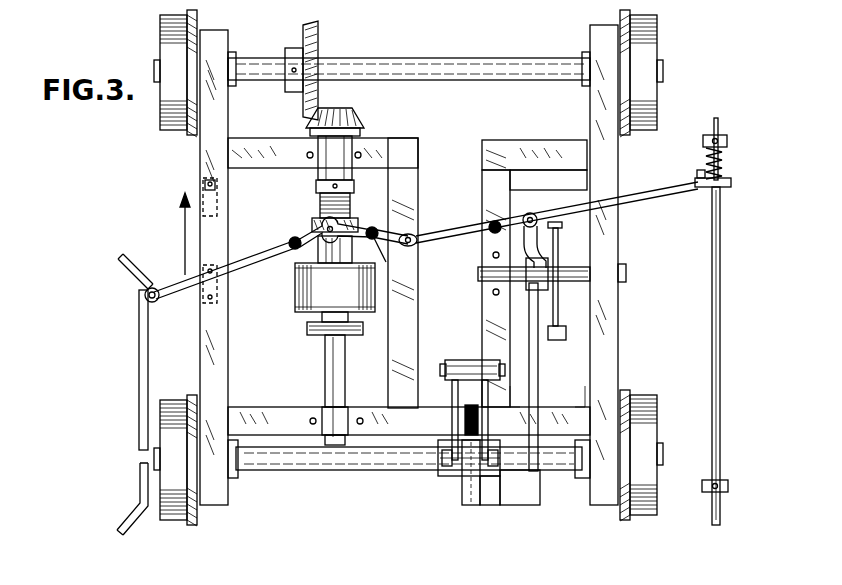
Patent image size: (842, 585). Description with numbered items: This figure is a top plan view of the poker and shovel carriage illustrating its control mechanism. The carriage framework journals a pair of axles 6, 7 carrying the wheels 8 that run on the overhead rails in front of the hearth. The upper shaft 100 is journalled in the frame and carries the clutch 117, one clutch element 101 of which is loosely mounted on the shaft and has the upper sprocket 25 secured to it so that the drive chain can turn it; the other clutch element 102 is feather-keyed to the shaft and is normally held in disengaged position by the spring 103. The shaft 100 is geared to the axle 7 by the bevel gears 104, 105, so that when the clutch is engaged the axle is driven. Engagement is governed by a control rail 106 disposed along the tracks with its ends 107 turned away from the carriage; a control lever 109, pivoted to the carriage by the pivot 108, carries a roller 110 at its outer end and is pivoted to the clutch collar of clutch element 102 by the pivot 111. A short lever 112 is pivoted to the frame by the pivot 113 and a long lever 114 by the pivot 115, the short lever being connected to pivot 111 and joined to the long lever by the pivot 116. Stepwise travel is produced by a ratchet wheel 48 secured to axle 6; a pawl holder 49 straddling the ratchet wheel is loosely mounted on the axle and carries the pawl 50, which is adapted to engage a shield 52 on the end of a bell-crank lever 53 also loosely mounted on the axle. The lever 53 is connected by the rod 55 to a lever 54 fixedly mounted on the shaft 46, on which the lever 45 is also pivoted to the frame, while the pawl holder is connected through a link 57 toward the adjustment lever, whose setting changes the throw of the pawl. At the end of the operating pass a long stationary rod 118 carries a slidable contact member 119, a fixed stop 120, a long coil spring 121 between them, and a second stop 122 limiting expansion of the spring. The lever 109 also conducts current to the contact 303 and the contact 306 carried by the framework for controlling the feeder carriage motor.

The axle 6 is at (381, 472).
The axle 7 is at (452, 62).
The wheels 8 is at (162, 33).
The upper sprocket 25 is at (315, 335).
The lever 45 is at (541, 245).
The pivot 46 is at (626, 272).
The ratchet wheel 48 is at (464, 420).
The pawl holder 49 is at (446, 471).
The pawl 50 is at (470, 456).
The shield 52 is at (471, 492).
The bell-crank lever 53 is at (510, 496).
The lever 54 is at (546, 286).
The rod 55 is at (539, 380).
The link 57 is at (464, 362).
The upper shaft 100 is at (330, 355).
The clutch element 101 is at (335, 274).
The clutch element 102 is at (308, 250).
The spring 103 is at (320, 199).
The bevel gear 104 is at (319, 46).
The bevel gear 105 is at (360, 119).
The control rail 106 is at (142, 403).
The ends 107 is at (128, 276).
The pivot 108 is at (290, 240).
The control lever 109 is at (242, 272).
The roller 110 is at (157, 301).
The pivot 111 is at (351, 200).
The short lever 112 is at (398, 250).
The pivot 113 is at (380, 232).
The long lever 114 is at (645, 200).
The pivot 115 is at (490, 232).
The pivot 116 is at (417, 242).
The clutch 117 is at (300, 301).
The stationary rod 118 is at (724, 346).
The contact member 119 is at (724, 189).
The stop 120 is at (729, 140).
The coil spring 121 is at (724, 164).
The second stop 122 is at (726, 481).
The contact 303 is at (210, 268).
The contact 306 is at (208, 180).